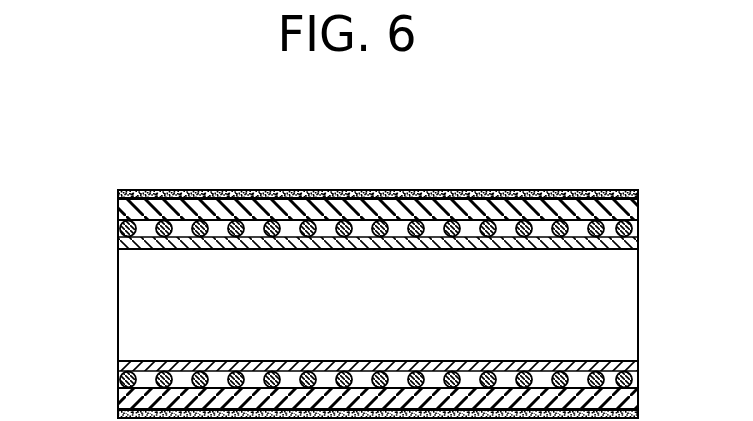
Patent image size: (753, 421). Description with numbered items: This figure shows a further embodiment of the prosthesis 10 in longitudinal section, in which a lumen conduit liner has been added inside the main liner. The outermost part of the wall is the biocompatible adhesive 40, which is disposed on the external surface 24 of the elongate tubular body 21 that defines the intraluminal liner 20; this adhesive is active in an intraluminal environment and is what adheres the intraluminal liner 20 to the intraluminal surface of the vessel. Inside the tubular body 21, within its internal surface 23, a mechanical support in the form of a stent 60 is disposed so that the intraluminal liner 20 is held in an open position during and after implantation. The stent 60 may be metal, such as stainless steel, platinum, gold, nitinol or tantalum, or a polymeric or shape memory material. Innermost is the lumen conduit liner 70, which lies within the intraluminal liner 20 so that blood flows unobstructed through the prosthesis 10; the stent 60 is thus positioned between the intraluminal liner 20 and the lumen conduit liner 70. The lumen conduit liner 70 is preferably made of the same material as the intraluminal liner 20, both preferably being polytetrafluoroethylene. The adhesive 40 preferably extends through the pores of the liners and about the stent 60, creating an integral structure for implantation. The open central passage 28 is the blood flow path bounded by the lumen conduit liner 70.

The prosthesis 10 is at (205, 115).
The intraluminal liner 20 is at (232, 190).
The elongate tubular body 21 is at (293, 203).
The internal surface 23 is at (437, 228).
The external surface 24 is at (348, 199).
The lumen 28 is at (168, 321).
The biocompatible adhesive 40 is at (171, 190).
The stent 60 is at (525, 226).
The lumen conduit liner 70 is at (605, 235).